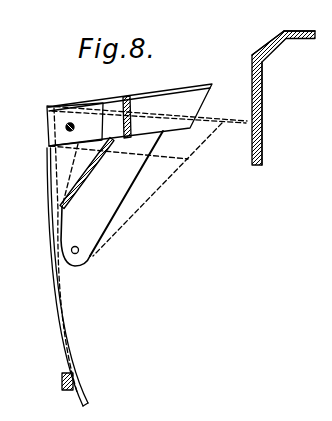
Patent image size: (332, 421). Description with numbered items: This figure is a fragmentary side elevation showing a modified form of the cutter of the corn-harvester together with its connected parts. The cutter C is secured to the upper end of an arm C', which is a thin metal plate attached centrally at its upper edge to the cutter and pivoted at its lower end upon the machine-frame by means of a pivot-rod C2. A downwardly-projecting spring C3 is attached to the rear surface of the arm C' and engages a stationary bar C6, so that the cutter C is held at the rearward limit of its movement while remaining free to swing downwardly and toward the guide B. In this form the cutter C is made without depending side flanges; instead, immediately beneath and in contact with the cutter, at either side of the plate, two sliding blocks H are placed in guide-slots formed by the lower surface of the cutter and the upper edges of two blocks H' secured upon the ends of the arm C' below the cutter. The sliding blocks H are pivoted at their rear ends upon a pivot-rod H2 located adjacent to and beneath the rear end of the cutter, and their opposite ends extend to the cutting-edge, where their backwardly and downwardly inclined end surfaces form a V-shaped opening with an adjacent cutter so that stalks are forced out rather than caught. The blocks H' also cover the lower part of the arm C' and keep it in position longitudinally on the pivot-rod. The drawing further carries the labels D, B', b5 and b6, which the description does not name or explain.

The cutter C is at (129, 111).
The pivot-rod H2 is at (66, 128).
The sliding blocks H is at (137, 117).
The blade plate D is at (147, 245).
The arm C' is at (87, 173).
The blocks H' is at (126, 193).
The pivot-rod C2 is at (78, 253).
The spring C3 is at (68, 277).
The stationary bar C6 is at (62, 381).
The guide B is at (283, 98).
The vertical arm of bracket B' is at (273, 113).
The bend of bracket b5 is at (268, 43).
The horizontal flange of bracket b6 is at (299, 24).